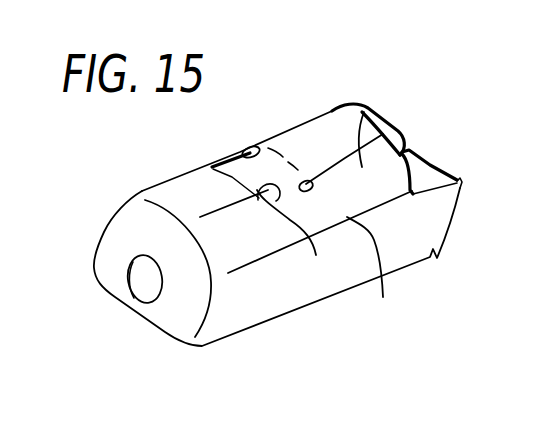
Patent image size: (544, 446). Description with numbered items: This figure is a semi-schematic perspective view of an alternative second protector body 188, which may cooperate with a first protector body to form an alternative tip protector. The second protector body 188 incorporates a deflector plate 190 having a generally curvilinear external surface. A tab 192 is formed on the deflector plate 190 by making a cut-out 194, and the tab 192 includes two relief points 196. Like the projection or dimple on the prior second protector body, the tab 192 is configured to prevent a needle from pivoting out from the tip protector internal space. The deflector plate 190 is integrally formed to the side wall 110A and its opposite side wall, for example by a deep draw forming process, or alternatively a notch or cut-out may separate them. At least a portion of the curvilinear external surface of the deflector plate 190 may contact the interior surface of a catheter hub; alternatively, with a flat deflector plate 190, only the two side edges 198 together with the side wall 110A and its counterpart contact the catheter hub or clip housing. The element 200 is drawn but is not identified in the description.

The housing 188 is at (172, 168).
The housing portion 110A is at (269, 289).
The clip 190 is at (365, 115).
The flange 192 is at (243, 150).
The channel 194 is at (316, 255).
The tabs 196 is at (307, 182).
The legs 198 is at (323, 130).
The rib 200 is at (387, 271).